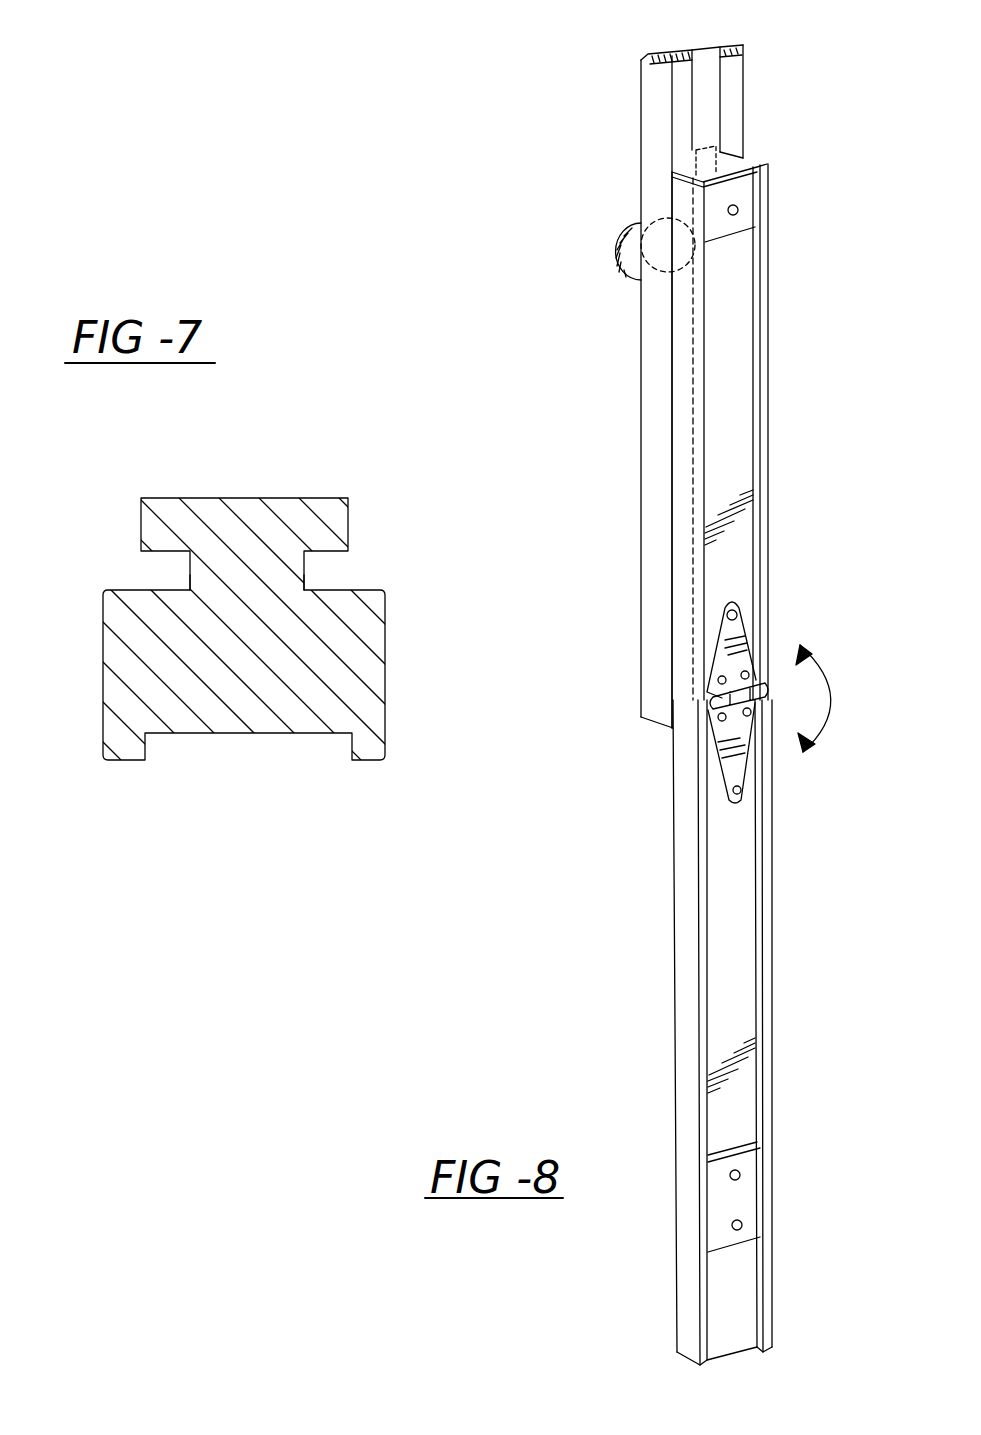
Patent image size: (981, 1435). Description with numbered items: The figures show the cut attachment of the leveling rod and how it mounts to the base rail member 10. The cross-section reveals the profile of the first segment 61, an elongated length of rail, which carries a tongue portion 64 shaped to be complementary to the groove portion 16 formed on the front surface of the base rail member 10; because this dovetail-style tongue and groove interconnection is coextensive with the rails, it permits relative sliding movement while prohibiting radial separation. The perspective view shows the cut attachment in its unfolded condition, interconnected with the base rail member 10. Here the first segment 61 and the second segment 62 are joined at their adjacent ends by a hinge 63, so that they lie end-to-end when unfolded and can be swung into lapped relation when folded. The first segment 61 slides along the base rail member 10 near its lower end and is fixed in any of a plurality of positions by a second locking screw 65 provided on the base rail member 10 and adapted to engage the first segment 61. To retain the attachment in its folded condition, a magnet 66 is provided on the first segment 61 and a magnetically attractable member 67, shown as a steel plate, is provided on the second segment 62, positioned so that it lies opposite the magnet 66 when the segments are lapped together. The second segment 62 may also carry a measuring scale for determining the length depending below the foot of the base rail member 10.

In FIG. 8, the base rail member 10 is at (640, 145).
In FIG. 8, the groove portion 16 is at (700, 90).
In FIG. 7, the first segment 61 is at (105, 703).
In FIG. 8, the first segment 61 is at (768, 427).
In FIG. 8, the second segment 62 is at (683, 945).
In FIG. 8, the hinge 63 is at (712, 721).
In FIG. 7, the tongue portion 64 is at (253, 510).
In FIG. 8, the tongue portion 64 is at (707, 147).
In FIG. 8, the second locking screw 65 is at (668, 265).
In FIG. 8, the magnet 66 is at (748, 213).
In FIG. 8, the magnetically attractable member 67 is at (745, 1190).